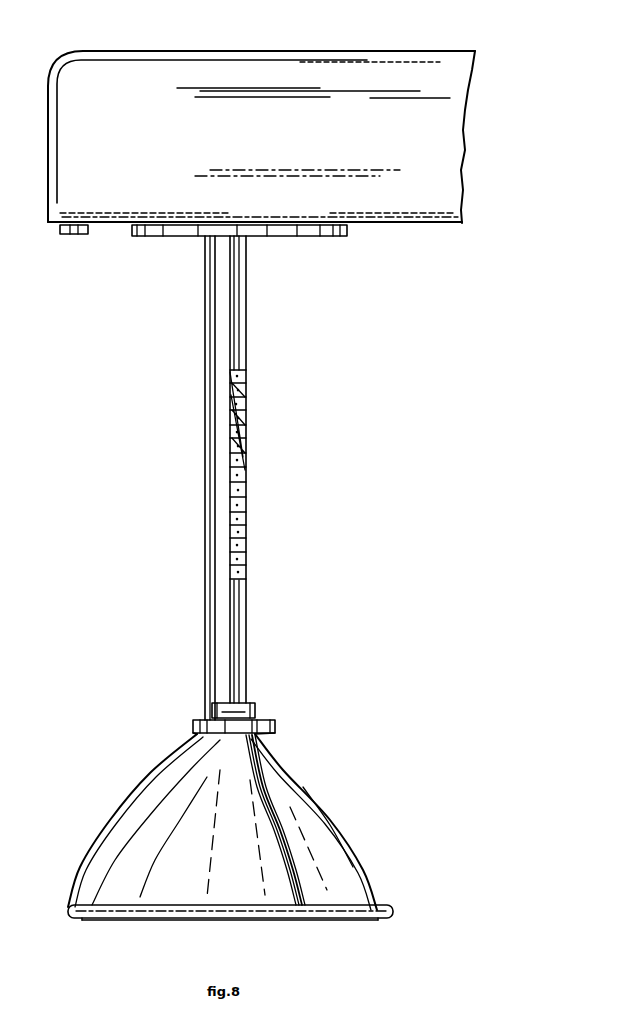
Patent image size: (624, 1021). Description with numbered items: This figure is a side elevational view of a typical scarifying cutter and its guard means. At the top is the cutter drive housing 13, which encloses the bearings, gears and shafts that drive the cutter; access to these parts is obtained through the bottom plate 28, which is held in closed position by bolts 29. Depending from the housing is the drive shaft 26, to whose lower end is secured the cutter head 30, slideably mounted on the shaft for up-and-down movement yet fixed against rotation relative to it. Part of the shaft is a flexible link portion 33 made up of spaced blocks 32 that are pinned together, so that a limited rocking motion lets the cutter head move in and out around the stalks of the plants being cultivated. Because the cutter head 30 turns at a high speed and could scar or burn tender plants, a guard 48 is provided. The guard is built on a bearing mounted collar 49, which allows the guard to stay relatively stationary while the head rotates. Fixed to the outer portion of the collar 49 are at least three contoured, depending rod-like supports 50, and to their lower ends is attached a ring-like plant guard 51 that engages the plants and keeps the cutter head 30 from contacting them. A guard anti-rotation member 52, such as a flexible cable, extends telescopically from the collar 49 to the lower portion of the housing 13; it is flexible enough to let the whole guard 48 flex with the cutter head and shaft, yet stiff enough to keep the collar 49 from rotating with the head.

The cutter drive housing 13 is at (300, 58).
The drive shaft 26 is at (243, 655).
The bottom plate 28 is at (428, 210).
The bolts 29 is at (73, 233).
The cutter head 30 is at (218, 821).
The block 32 is at (233, 450).
The flexible link portion 33 is at (253, 498).
The guard 48 is at (186, 724).
The bearing mounted collar 49 is at (262, 728).
The rod-like supports 50 is at (110, 820).
The plant guard 51 is at (110, 910).
The guard anti-rotation member 52 is at (205, 511).